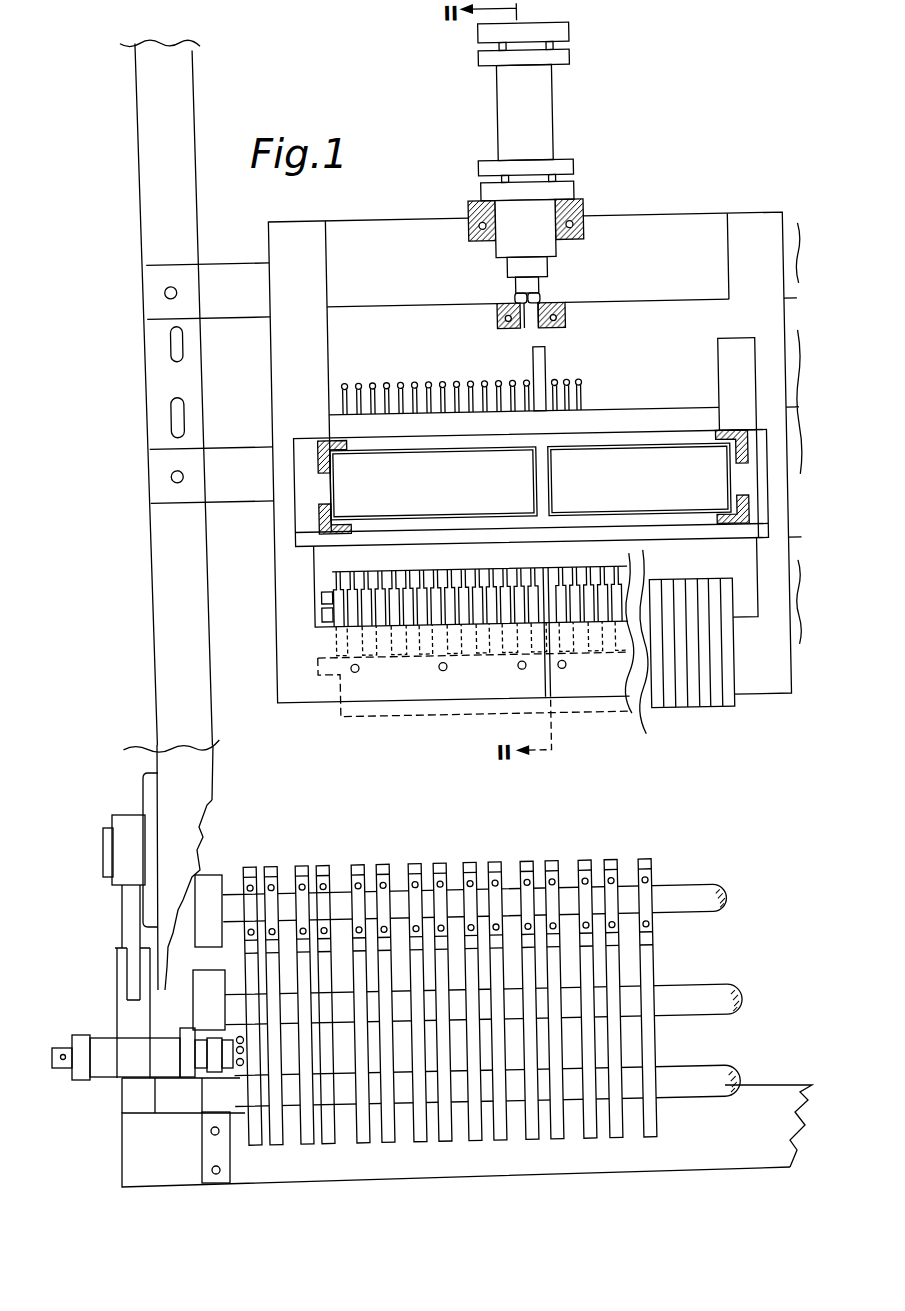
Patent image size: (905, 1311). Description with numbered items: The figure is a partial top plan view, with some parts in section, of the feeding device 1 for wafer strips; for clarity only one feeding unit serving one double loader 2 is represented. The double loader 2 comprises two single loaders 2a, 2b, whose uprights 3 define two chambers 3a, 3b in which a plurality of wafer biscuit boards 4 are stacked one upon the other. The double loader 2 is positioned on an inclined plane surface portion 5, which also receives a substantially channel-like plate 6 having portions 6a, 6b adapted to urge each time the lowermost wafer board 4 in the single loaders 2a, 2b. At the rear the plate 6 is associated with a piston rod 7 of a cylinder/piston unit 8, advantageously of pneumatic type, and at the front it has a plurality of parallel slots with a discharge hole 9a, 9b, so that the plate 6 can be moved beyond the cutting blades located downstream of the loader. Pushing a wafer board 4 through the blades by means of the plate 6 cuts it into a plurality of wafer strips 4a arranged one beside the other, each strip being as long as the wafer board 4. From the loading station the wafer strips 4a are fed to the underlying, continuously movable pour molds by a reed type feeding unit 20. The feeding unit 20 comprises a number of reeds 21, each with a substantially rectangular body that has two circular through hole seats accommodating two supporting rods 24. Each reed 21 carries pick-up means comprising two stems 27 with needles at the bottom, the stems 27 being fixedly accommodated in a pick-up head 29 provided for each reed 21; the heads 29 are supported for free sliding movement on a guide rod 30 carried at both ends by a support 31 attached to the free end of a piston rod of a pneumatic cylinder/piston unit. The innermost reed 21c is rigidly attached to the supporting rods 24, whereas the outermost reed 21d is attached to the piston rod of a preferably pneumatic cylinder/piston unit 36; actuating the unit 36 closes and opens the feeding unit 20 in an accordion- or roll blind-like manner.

The feeding device 1 is at (685, 805).
The double loader 2 is at (673, 458).
The single loader 2a is at (359, 507).
The single loader 2b is at (632, 458).
The uprights 3 is at (558, 440).
The chamber 3a is at (453, 441).
The chamber 3b is at (703, 440).
The wafer biscuit boards 4 is at (530, 481).
The wafer strips 4a is at (663, 592).
The inclined plane surface portion 5 is at (753, 231).
The channel-like plate 6 is at (630, 329).
The plate portion 6a is at (393, 320).
The plate portion 6b is at (686, 320).
The piston rod 7 is at (536, 284).
The cylinder/piston unit 8 is at (553, 120).
The discharge hole 9a is at (364, 379).
The discharge hole 9b is at (584, 384).
The feeding unit 20 is at (395, 853).
The reeds 21 is at (362, 1135).
The innermost reed 21c is at (658, 1121).
The outermost reed 21d is at (254, 1129).
The supporting rods 24 is at (720, 1006).
The stems 27 is at (450, 878).
The pick-up head 29 is at (559, 880).
The guide rod 30 is at (714, 899).
The support 31 is at (208, 880).
The cylinder/piston unit 36 is at (102, 1047).